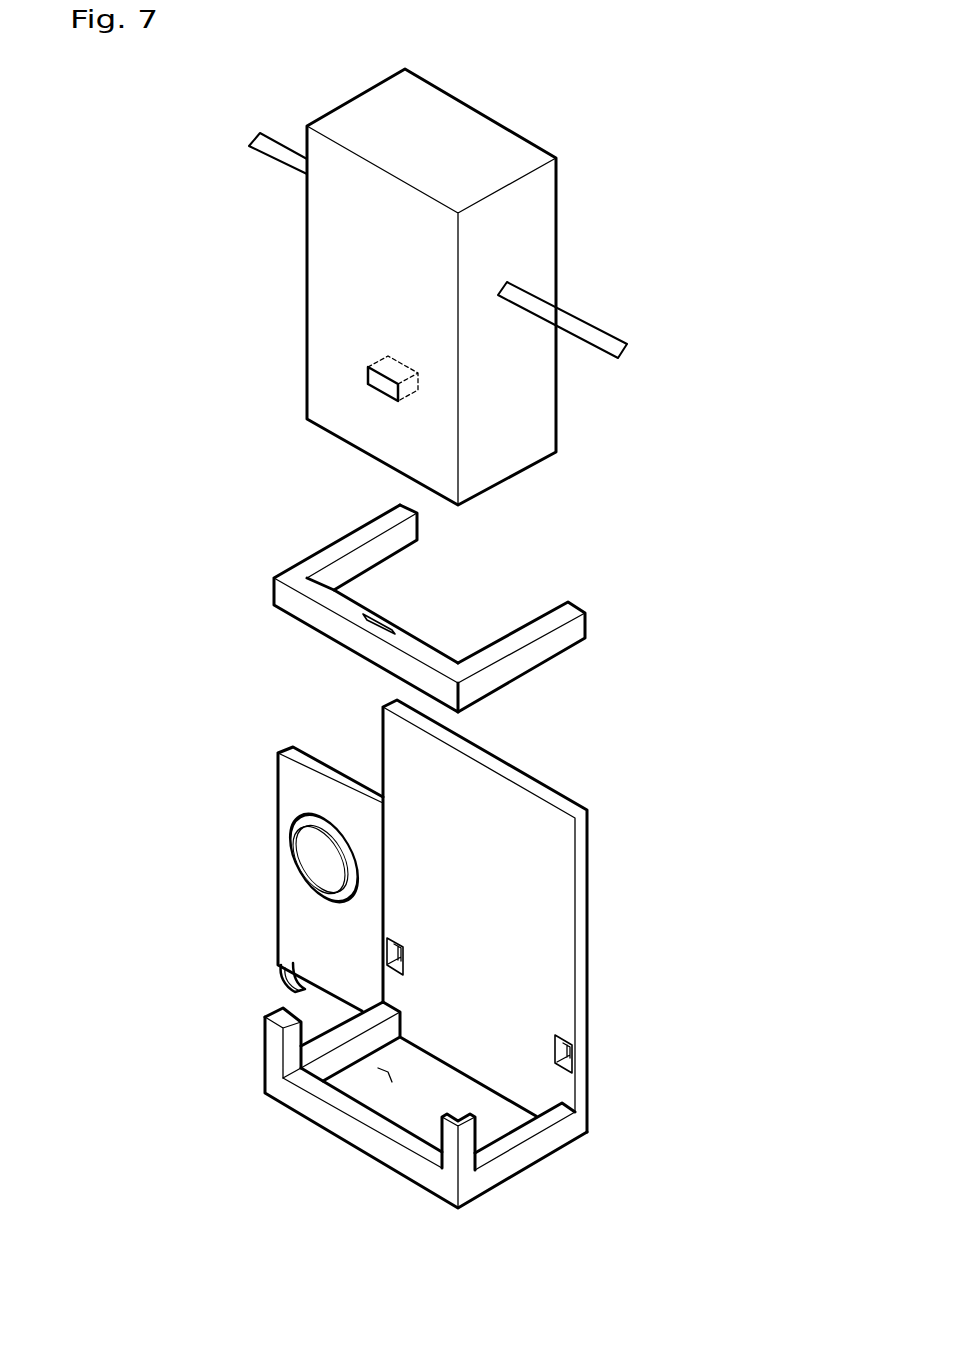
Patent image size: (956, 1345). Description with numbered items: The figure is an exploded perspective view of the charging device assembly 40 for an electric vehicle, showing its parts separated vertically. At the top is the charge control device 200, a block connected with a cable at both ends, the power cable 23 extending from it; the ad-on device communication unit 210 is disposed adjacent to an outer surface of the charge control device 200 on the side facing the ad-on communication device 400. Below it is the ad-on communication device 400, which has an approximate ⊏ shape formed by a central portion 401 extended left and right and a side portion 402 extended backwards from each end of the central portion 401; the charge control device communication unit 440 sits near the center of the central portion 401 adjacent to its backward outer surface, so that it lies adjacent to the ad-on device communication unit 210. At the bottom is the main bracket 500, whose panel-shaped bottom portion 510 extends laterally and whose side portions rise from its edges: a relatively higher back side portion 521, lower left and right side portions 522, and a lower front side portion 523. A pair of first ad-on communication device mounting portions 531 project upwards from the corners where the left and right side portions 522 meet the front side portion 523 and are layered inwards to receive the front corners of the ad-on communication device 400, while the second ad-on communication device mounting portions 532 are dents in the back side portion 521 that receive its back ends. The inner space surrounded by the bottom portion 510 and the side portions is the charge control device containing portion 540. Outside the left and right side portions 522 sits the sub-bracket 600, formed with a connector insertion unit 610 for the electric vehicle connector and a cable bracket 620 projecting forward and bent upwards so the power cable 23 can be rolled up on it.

The charging device assembly 40 is at (128, 171).
The power cable 23 is at (580, 326).
The charge control device 200 is at (330, 290).
The ad-on device communication unit 210 is at (372, 380).
The ad-on communication device 400 is at (441, 602).
The central portion 401 is at (337, 604).
The side portion 402 is at (347, 543).
The charge control device communication unit 440 is at (380, 617).
The main bracket 500 is at (415, 970).
The bottom portion 510 is at (502, 1117).
The back side portion 521 is at (583, 937).
The left and right side portions 522 is at (503, 1168).
The front side portion 523 is at (387, 1152).
The first ad-on communication device mounting portion 531 is at (268, 1051).
The second ad-on communication device mounting portion 532 is at (569, 1063).
The charge control device containing portion 540 is at (386, 1073).
The sub-bracket 600 is at (290, 839).
The connector insertion unit 610 is at (303, 858).
The cable bracket 620 is at (283, 982).